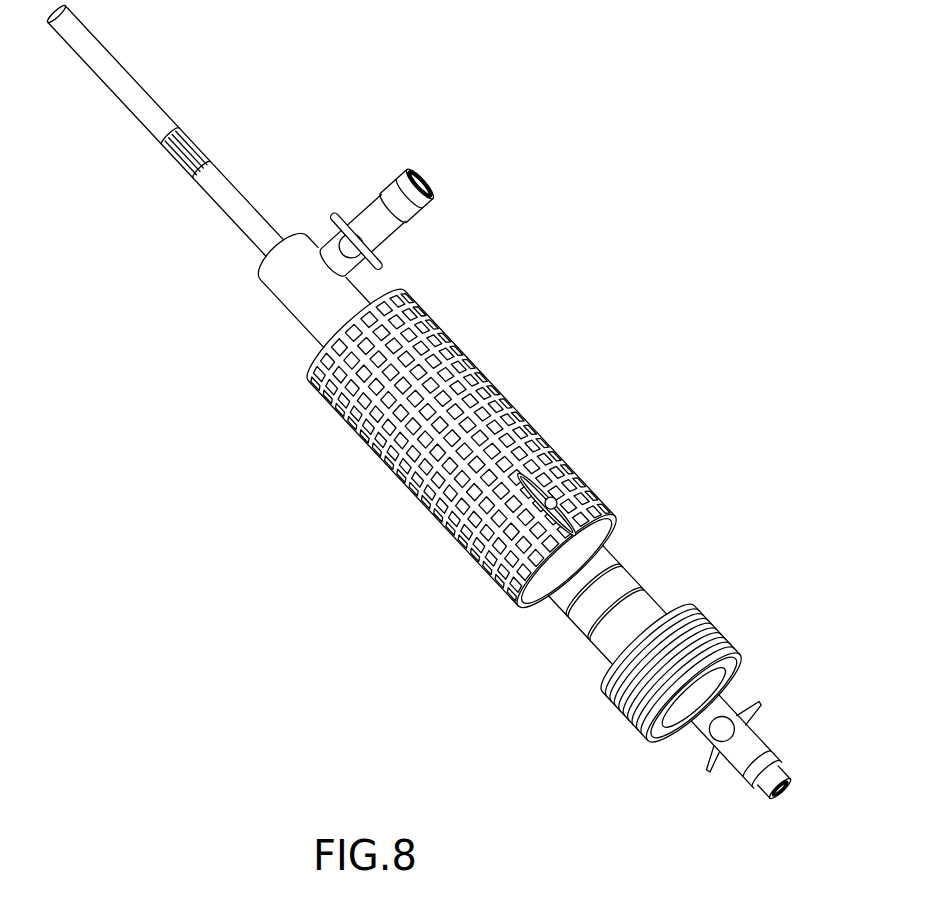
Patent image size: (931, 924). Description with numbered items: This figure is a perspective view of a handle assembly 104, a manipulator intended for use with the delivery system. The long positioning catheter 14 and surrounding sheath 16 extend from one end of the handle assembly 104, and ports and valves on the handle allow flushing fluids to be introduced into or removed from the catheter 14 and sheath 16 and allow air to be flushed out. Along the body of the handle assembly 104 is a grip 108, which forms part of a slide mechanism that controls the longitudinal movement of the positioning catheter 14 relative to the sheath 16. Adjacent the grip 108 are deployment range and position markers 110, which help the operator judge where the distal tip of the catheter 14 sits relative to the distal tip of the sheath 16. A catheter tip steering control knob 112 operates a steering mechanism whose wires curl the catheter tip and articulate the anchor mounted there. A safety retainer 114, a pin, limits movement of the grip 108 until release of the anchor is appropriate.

The positioning catheter 14 is at (177, 167).
The sheath 16 is at (233, 213).
The handle assembly 104 is at (577, 280).
The grip 108 is at (387, 467).
The deployment range and position markers 110 is at (563, 606).
The catheter tip steering control knob 112 is at (707, 620).
The safety retainer 114 is at (560, 488).